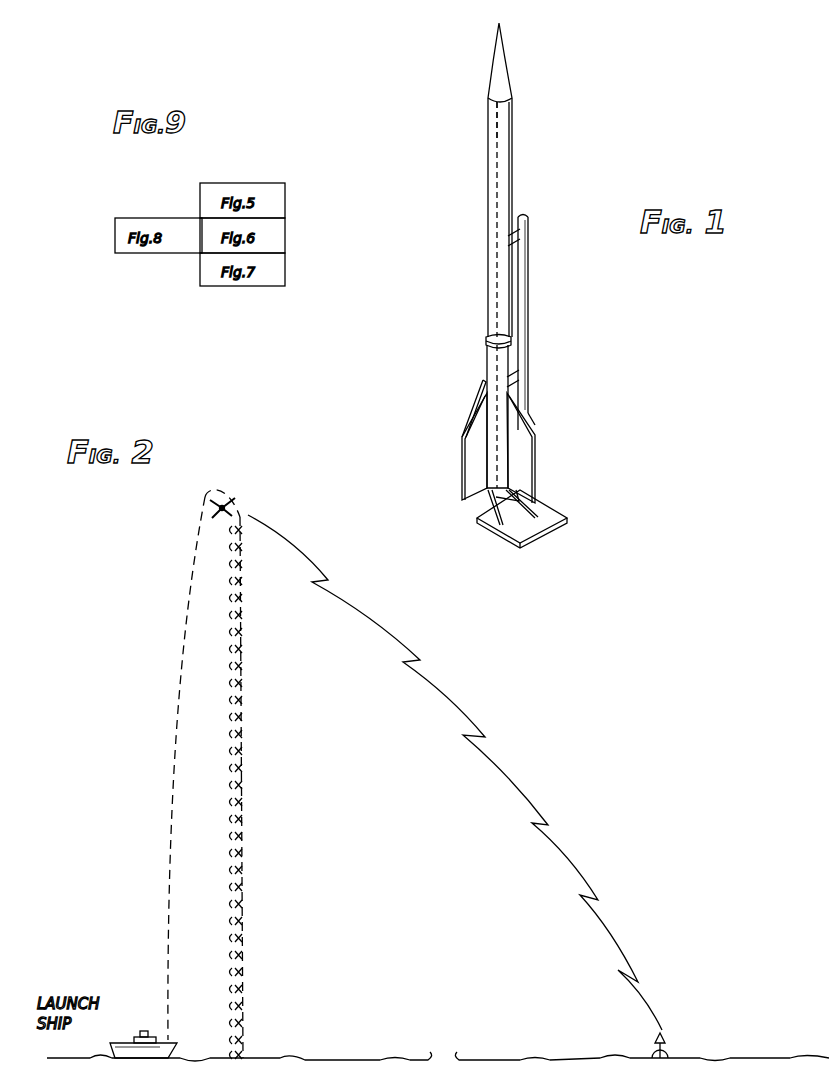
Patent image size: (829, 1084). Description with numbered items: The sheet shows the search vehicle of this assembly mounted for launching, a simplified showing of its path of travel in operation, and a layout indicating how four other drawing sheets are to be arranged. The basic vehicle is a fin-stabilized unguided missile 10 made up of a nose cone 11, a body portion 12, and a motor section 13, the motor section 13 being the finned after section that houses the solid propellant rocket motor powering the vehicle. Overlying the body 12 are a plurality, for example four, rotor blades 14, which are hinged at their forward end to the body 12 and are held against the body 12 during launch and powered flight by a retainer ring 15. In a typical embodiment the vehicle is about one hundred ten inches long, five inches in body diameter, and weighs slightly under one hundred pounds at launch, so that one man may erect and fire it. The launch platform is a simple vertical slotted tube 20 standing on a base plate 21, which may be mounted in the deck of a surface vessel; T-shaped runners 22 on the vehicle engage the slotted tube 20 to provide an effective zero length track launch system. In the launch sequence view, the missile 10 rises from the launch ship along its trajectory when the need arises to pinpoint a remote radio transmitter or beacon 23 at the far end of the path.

In FIG. 1, the fin-stabilized unguided missile 10 is at (487, 262).
In FIG. 1, the nose cone 11 is at (497, 70).
In FIG. 1, the body portion 12 is at (500, 125).
In FIG. 1, the motor section 13 is at (500, 447).
In FIG. 1, the rotor blades 14 is at (492, 147).
In FIG. 1, the retainer ring 15 is at (487, 340).
In FIG. 1, the vertical slotted tube 20 is at (522, 293).
In FIG. 1, the base plate 21 is at (552, 513).
In FIG. 1, the T-shaped runners 22 is at (515, 238).
In FIG. 2, the remote radio transmitter or beacon 23 is at (668, 1055).